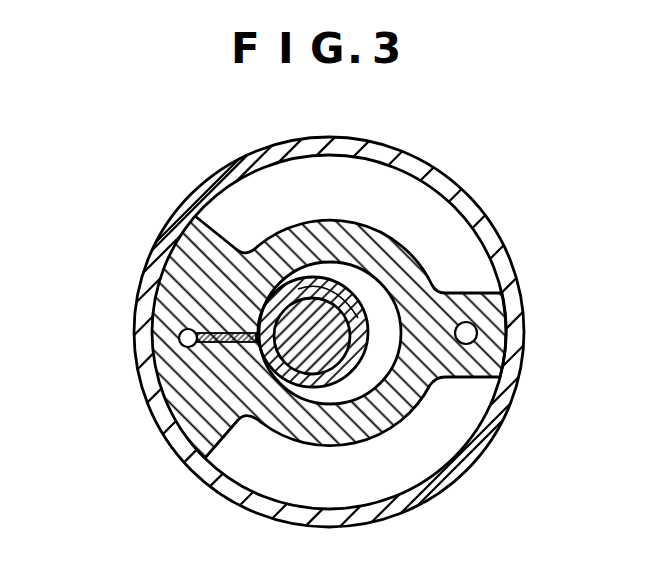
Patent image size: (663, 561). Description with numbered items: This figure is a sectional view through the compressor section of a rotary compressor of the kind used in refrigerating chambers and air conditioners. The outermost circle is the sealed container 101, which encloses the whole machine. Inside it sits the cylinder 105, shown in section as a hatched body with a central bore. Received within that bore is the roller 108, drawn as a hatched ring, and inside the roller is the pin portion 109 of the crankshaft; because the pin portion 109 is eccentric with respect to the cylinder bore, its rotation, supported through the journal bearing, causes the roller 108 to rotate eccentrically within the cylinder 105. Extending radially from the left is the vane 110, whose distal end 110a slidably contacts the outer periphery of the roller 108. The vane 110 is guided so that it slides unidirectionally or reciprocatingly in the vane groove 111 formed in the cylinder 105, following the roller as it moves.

The sealed container 101 is at (444, 176).
The cylinder 105 is at (449, 292).
The roller 108 is at (373, 400).
The pin portion of the crankshaft 109 is at (300, 345).
The vane 110 is at (179, 336).
The pin tip 110a is at (257, 300).
The vane groove 111 is at (240, 330).